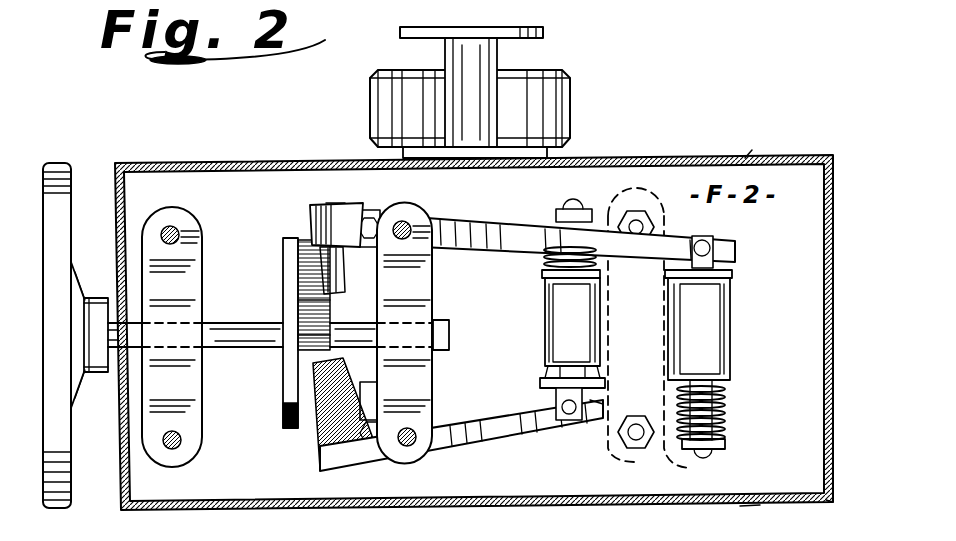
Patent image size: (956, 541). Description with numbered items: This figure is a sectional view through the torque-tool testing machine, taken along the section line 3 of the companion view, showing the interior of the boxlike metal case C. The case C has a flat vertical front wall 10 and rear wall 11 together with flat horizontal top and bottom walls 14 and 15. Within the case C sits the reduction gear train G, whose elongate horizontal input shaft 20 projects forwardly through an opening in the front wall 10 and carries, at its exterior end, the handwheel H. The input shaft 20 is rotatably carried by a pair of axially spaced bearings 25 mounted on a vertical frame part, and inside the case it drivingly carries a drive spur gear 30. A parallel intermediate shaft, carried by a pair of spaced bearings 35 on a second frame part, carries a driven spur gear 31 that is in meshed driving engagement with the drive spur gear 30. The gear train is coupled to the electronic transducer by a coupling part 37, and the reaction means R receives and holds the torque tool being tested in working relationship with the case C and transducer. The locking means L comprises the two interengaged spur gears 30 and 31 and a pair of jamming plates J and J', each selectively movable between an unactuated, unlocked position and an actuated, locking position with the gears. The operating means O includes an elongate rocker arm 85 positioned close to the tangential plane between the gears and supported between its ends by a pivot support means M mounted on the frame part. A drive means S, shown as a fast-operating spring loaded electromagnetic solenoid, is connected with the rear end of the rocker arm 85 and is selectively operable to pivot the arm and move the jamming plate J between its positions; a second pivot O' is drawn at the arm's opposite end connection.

The section line of FIG. 3 is at (108, 188).
The case C is at (208, 152).
The handwheel H is at (78, 475).
The front wall 10 is at (112, 234).
The coupling part 37 is at (573, 88).
The reaction means R is at (545, 33).
The top wall 14 is at (768, 118).
The bottom wall 15 is at (750, 500).
The rear wall 11 is at (833, 490).
The pivot support means M is at (386, 192).
The jamming plate J' is at (278, 322).
The driven spur gear 31 is at (297, 236).
The locking means L is at (333, 185).
The jamming plate J is at (302, 413).
The drive spur gear 30 is at (298, 410).
The bearings 35 is at (666, 335).
The rocker arm 85 is at (511, 226).
The bearings 25 is at (186, 457).
The input shaft 20 is at (234, 328).
The reduction gear train G is at (488, 282).
The drive means S is at (640, 310).
The means O is at (746, 238).
The lower pivot O' is at (607, 441).